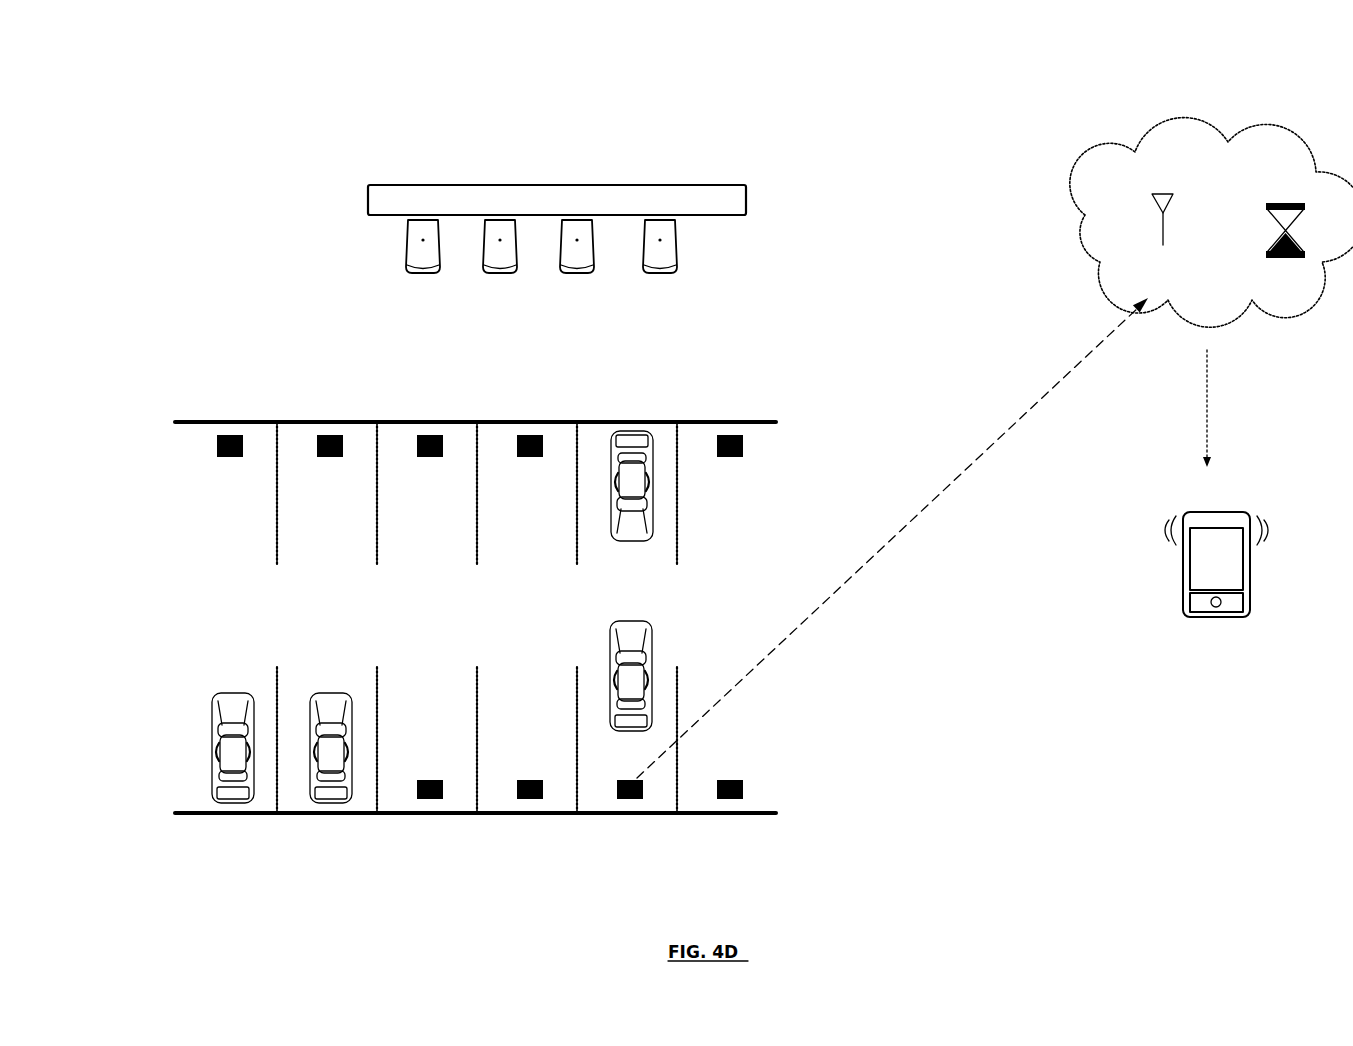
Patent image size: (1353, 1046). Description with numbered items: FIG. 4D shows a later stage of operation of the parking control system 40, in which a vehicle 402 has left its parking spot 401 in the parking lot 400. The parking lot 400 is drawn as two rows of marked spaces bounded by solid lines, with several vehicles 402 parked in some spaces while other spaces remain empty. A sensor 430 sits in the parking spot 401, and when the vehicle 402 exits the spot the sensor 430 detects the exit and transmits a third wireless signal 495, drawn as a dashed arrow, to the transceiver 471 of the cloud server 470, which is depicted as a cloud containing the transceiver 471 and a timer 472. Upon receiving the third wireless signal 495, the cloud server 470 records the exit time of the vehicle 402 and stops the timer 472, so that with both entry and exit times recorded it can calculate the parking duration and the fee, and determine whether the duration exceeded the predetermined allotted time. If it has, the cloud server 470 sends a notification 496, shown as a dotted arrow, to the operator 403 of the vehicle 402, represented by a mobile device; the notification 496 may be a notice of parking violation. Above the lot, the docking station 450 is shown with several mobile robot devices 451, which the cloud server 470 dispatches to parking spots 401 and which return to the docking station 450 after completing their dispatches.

The parking control system 40 is at (183, 127).
The parking lot 400 is at (178, 593).
The parking spot 401 is at (595, 757).
The vehicle 402 is at (615, 660).
The operator 403 is at (1185, 598).
The sensor 430 is at (617, 793).
The docking station 450 is at (737, 185).
The mobile robot device 451 is at (677, 255).
The cloud server 470 is at (1153, 127).
The transceiver 471 is at (1157, 218).
The timer 472 is at (1283, 262).
The third wireless signal 495 is at (1040, 400).
The notification 496 is at (1200, 430).